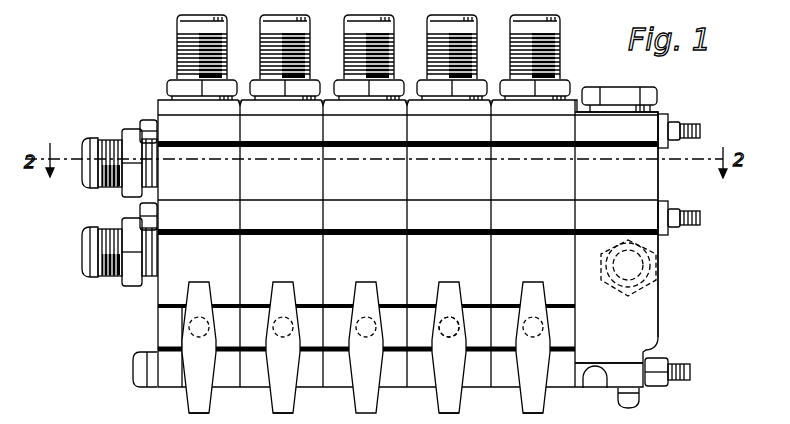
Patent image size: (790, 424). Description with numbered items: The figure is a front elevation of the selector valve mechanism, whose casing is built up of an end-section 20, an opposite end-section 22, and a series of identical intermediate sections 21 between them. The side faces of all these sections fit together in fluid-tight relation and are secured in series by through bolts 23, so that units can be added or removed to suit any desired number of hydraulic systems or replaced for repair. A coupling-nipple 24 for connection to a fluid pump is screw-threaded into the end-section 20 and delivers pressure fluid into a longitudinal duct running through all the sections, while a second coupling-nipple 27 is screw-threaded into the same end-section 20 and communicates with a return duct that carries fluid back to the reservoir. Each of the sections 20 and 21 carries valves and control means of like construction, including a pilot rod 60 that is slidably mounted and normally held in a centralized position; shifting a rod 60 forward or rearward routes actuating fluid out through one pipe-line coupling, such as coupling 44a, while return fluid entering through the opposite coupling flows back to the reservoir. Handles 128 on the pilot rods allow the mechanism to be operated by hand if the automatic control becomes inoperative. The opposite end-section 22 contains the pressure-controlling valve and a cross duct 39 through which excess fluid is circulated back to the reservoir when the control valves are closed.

The coupling 44a is at (258, 32).
The coupling-nipple 24 is at (107, 138).
The coupling-nipple 27 is at (104, 277).
The through bolts 23 is at (700, 131).
The end-section 20 is at (199, 334).
The intermediate sections 21 is at (408, 334).
The pilot rod 60 is at (456, 323).
The cross duct 39 is at (645, 268).
The opposite end-section 22 is at (616, 237).
The handles 128 is at (266, 392).